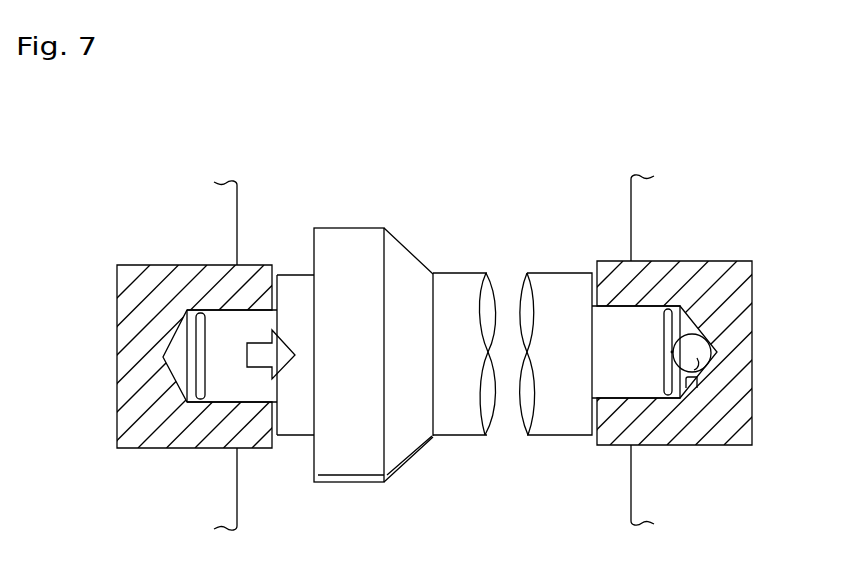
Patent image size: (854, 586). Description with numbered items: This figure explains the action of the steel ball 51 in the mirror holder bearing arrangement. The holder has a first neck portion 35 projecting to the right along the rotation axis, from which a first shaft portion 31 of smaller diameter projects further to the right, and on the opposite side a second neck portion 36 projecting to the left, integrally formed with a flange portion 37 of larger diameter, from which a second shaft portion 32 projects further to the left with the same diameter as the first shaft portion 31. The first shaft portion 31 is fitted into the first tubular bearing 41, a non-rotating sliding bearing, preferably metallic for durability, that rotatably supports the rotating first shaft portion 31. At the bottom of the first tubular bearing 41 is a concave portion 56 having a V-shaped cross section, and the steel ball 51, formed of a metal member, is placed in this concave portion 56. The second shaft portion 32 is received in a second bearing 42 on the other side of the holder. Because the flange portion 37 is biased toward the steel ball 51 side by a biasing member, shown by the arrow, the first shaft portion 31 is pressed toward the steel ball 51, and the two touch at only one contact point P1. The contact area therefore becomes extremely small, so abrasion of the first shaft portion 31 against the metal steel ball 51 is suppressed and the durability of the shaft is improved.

The first shaft portion 31 is at (627, 317).
The second shaft portion 32 is at (227, 327).
The first neck portion 35 is at (550, 286).
The second neck portion 36 is at (457, 286).
The flange portion 37 is at (347, 235).
The first tubular bearing 41 is at (713, 272).
The second holder block 42 is at (163, 275).
The steel ball 51 is at (713, 349).
The concave portion 56 is at (690, 385).
The contact point P1 is at (672, 352).